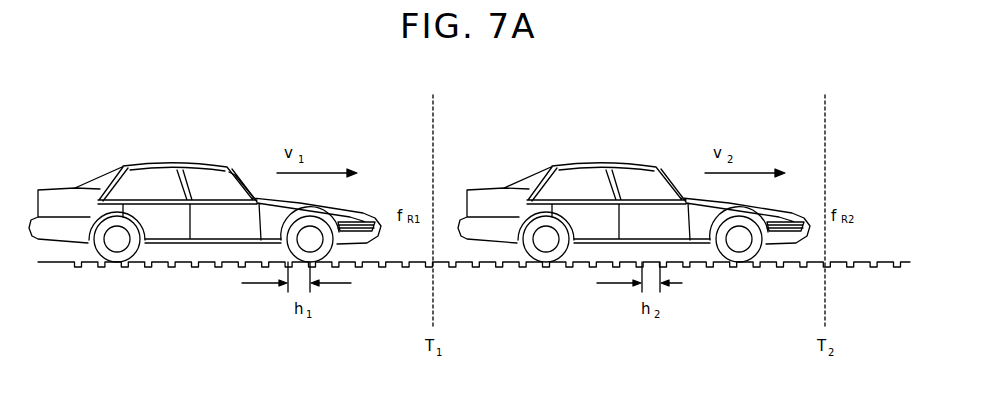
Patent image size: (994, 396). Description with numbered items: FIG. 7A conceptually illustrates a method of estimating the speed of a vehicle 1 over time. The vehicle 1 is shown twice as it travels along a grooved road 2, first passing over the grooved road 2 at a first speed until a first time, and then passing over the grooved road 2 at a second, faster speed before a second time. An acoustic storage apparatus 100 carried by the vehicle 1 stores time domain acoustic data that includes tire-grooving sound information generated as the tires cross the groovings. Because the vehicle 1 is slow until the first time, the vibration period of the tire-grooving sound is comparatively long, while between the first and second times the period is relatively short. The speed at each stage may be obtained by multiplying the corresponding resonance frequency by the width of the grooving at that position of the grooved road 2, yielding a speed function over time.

The vehicle 1 is at (138, 162).
The acoustic storage apparatus 100 is at (235, 173).
The grooved road 2 is at (857, 257).